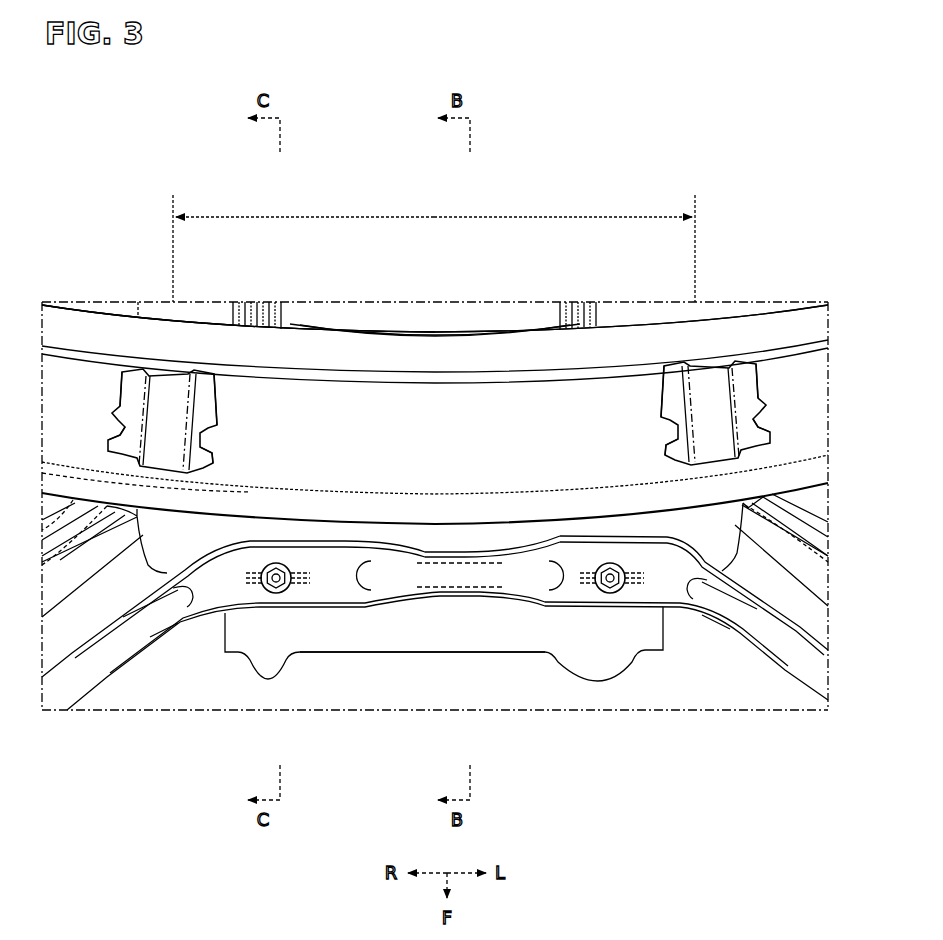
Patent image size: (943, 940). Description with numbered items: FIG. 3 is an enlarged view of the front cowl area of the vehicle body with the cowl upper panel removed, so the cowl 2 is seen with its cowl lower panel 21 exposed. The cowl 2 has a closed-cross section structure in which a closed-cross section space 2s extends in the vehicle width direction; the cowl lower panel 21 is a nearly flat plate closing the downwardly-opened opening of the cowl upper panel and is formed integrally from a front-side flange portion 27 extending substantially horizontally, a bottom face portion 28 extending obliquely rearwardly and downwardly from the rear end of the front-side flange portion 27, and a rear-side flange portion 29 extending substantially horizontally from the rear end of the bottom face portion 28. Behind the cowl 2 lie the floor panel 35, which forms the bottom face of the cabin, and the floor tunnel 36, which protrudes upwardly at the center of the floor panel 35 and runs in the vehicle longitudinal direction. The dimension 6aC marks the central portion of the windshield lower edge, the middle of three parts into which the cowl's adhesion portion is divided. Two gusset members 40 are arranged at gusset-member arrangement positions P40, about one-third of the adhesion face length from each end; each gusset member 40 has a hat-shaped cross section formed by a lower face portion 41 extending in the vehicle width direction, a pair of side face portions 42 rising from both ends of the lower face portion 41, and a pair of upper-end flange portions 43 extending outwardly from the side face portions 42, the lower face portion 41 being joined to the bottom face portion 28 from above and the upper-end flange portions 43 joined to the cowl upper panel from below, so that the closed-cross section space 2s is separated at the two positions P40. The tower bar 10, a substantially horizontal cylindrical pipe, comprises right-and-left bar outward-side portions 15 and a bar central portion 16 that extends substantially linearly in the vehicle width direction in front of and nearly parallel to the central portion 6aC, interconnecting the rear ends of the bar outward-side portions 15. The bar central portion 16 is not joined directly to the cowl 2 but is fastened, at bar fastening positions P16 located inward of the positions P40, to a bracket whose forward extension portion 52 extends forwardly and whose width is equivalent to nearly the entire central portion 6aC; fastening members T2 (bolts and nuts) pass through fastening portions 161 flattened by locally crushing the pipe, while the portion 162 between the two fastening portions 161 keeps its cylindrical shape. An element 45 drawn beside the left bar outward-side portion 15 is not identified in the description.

The cowl 2 is at (435, 318).
The closed-cross section space 2s is at (496, 385).
The central portion of windshield lower edge 6aC is at (434, 246).
The tower bar 10 is at (364, 604).
The bar outward-side portions 15 is at (125, 652).
The bar central portion 16 is at (453, 594).
The cowl lower panel 21 is at (343, 320).
The front-side flange portion 27 is at (416, 506).
The bottom face portion 28 is at (373, 410).
The rear-side flange portion 29 is at (478, 317).
The floor panel 35 is at (207, 310).
The floor tunnel 36 is at (298, 312).
The gusset member 40 is at (118, 370).
The lower face portion 41 is at (180, 388).
The side face portions 42 is at (142, 440).
The upper-end flange portions 43 is at (130, 400).
The rib 45 is at (195, 618).
The forward extension portion 52 is at (515, 656).
The fastening portions 161 is at (305, 556).
The portion interposed between fastening portions 162 is at (475, 556).
The bar fastening positions P16 is at (278, 558).
The gusset-member arrangement positions P40 is at (124, 350).
The fastening members T2 is at (266, 596).